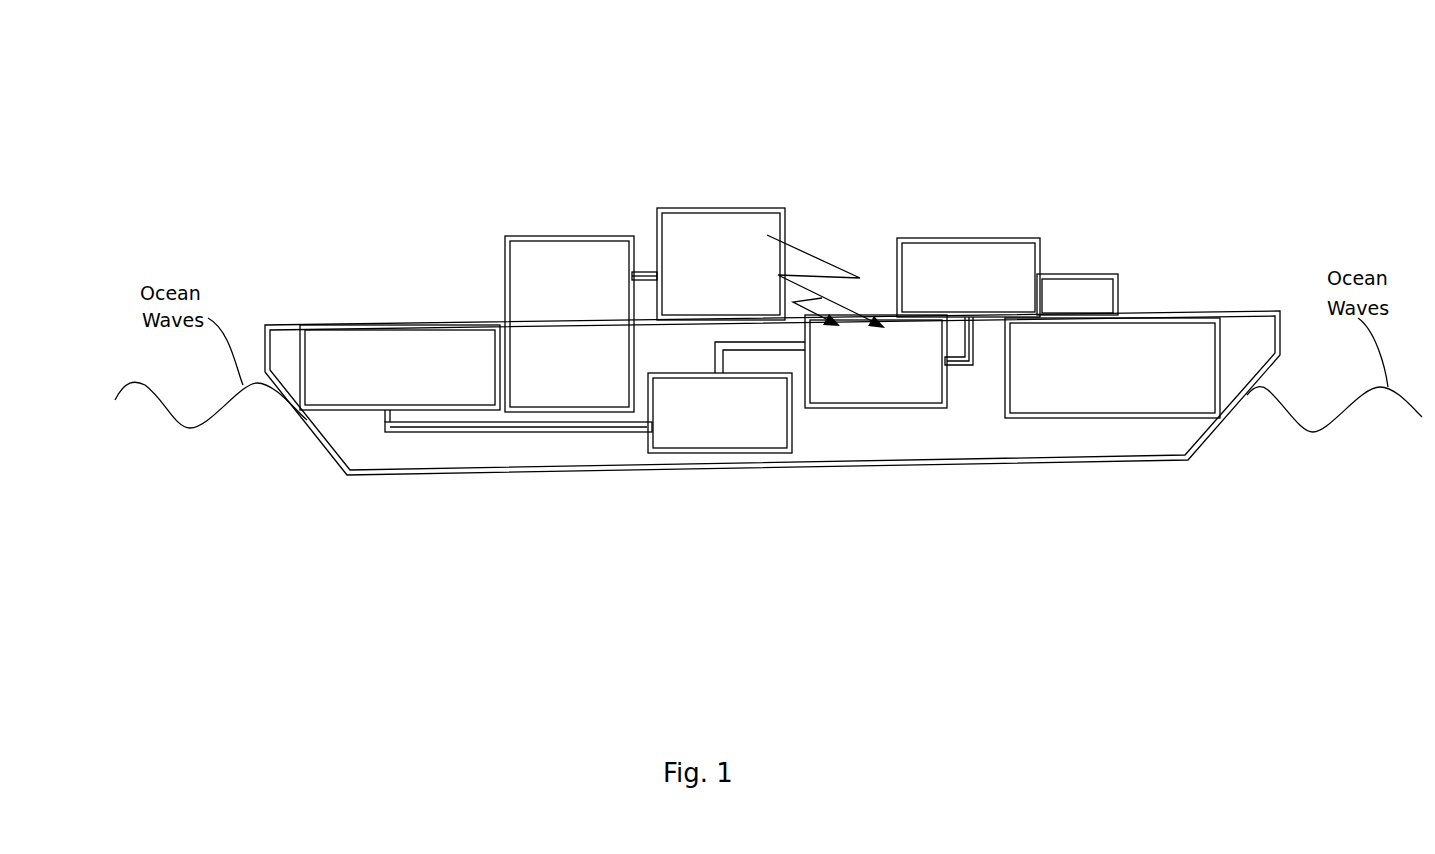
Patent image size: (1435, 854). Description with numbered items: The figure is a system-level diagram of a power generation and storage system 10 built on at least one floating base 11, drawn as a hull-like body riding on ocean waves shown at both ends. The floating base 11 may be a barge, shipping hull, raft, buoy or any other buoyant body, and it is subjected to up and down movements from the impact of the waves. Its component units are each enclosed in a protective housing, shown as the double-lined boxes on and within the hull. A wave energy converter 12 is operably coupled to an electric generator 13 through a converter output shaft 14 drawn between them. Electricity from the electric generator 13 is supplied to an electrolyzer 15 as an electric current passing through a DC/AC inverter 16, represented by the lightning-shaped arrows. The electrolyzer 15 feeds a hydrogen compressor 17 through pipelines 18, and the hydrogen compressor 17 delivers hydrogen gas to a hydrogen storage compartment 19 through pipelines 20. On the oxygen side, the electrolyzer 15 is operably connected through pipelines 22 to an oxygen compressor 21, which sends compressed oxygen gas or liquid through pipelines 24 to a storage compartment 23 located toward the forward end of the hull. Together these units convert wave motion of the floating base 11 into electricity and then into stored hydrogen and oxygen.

The system 10 is at (318, 152).
The floating base 11 is at (317, 438).
The wave energy converter 12 is at (556, 278).
The electric generator 13 is at (737, 260).
The converter output shaft 14 is at (643, 272).
The electrolyzer 15 is at (873, 352).
The DC/AC inverter 16 is at (830, 262).
The hydrogen compressor 17 is at (958, 278).
The pipelines 18 is at (967, 367).
The hydrogen storage compartment 19 is at (1113, 362).
The pipelines 20 is at (1087, 278).
The oxygen compressor 21 is at (703, 423).
The pipelines 22 is at (733, 358).
The storage compartment 23 is at (428, 352).
The pipelines 24 is at (545, 432).